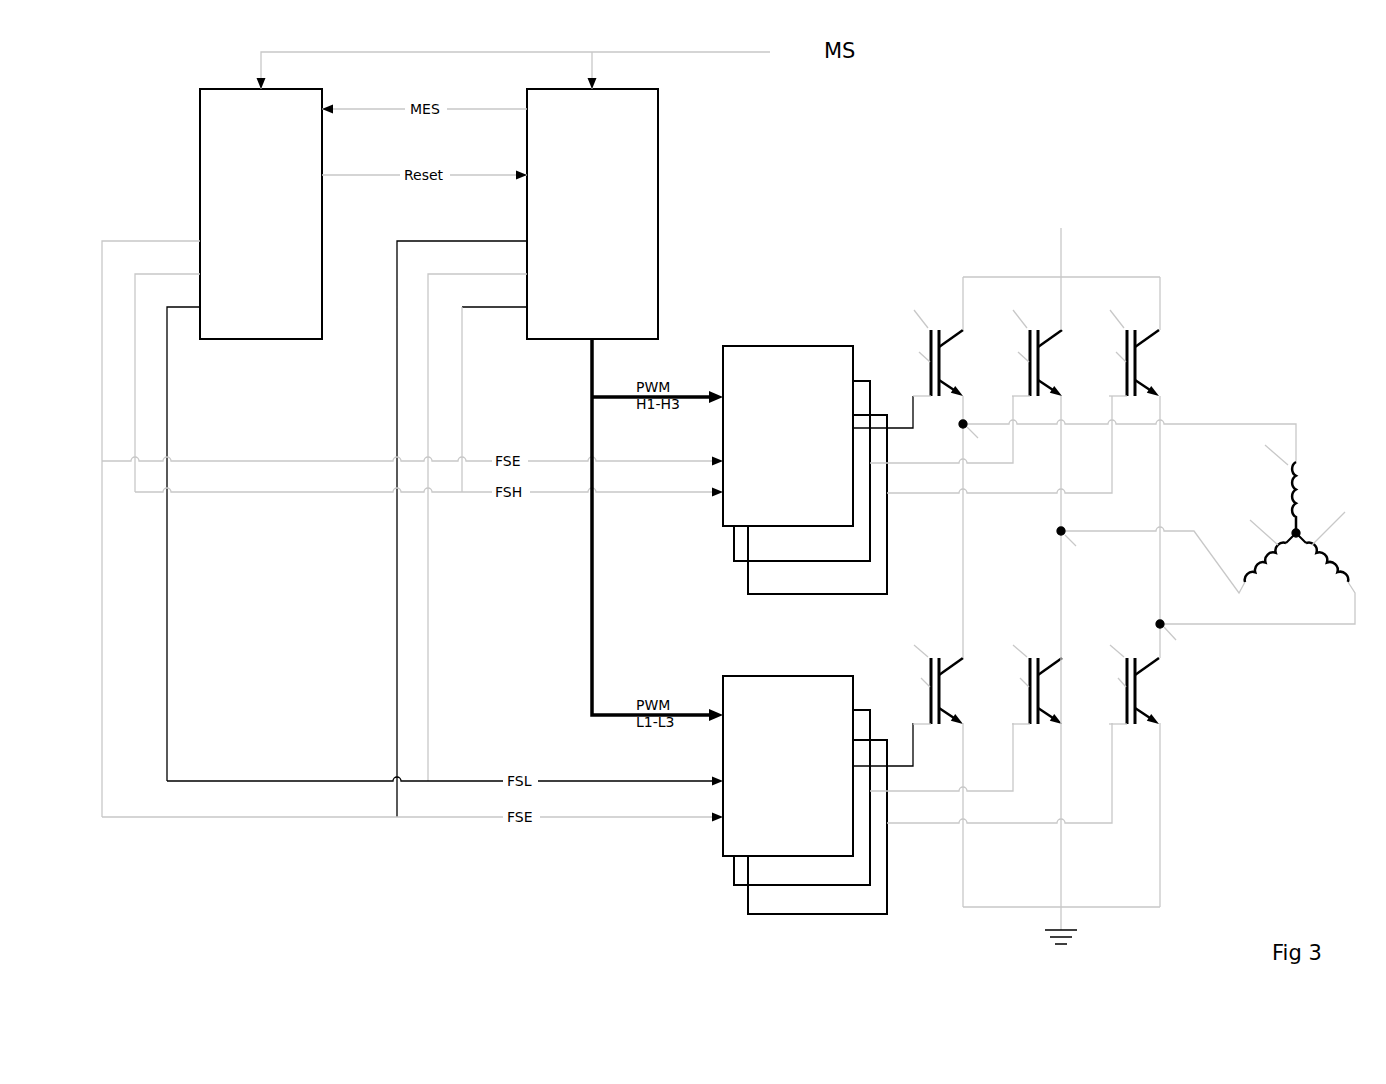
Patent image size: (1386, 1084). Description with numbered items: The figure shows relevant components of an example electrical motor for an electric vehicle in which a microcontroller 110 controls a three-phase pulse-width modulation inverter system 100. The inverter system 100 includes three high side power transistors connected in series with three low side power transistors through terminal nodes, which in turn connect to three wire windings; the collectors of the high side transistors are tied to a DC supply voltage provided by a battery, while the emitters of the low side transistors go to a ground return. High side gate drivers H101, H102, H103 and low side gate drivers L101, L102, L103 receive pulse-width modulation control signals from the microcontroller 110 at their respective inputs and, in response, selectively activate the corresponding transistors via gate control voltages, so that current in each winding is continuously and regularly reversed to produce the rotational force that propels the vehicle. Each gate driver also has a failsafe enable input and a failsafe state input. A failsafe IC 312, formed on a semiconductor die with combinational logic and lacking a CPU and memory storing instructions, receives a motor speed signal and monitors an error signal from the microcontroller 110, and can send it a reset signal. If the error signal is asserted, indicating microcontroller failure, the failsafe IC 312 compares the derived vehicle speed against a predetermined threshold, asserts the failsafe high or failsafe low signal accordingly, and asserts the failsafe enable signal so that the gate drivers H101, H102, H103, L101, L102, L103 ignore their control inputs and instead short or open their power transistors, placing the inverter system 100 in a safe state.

The failsafe IC 312 is at (261, 214).
The microcontroller 110 is at (592, 214).
The inverter system 100 is at (1190, 215).
The high side gate driver H101 is at (788, 436).
The high side gate driver H102 is at (802, 471).
The high side gate driver H103 is at (817, 504).
The low side gate driver L101 is at (788, 766).
The low side gate driver L102 is at (802, 797).
The low side gate driver L103 is at (817, 827).